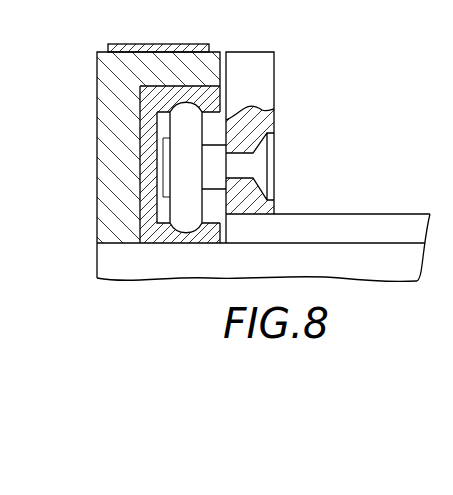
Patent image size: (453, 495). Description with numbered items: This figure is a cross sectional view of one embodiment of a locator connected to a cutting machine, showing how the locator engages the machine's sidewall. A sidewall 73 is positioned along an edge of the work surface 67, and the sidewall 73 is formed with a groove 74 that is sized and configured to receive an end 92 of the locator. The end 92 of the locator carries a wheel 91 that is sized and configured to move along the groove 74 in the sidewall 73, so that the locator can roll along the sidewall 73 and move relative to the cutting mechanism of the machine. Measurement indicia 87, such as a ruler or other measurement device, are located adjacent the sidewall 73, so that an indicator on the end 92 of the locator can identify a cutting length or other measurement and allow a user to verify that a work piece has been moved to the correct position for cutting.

The sidewall 73 is at (95, 82).
The measurement indicia 87 is at (133, 43).
The wheel 91 is at (178, 127).
The groove 74 is at (173, 226).
The end of locator 92 is at (260, 71).
The work surface 67 is at (385, 268).